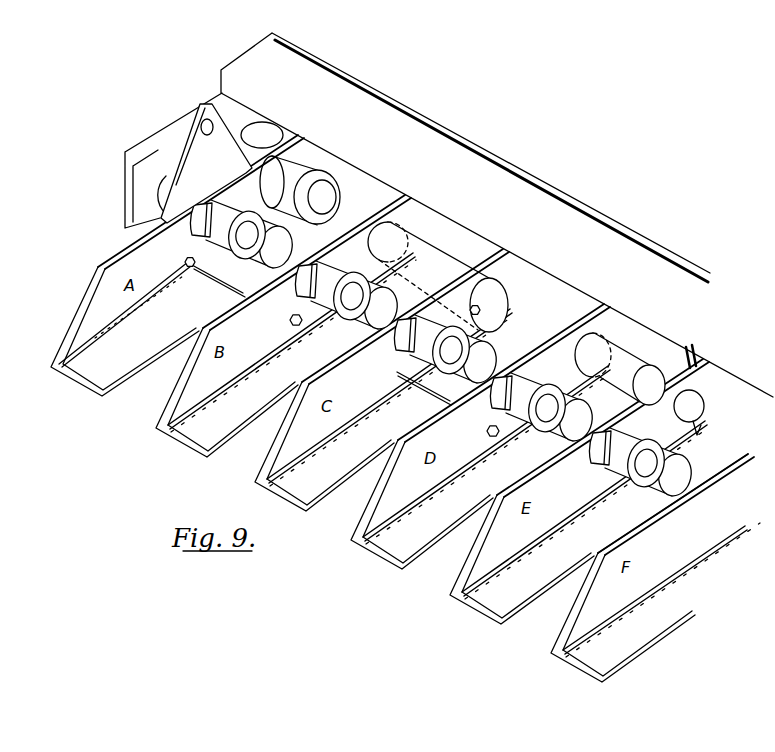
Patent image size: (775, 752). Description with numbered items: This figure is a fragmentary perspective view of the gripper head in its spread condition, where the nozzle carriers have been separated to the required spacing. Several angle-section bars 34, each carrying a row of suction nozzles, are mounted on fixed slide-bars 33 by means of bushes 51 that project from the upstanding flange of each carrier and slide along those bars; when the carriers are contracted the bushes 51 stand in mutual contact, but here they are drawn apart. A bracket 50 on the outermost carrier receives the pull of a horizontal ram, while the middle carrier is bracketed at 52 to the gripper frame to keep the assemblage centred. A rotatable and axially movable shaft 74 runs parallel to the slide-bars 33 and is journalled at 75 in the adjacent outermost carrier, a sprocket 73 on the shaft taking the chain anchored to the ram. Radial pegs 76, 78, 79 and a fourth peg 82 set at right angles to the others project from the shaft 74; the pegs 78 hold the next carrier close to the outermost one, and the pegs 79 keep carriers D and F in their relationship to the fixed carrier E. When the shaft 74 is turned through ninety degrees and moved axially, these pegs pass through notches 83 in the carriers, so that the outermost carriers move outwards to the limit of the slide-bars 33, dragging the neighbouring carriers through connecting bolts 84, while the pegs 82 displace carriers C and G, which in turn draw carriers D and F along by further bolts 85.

The slide-bar 33 is at (660, 482).
The angle-section bar 34 is at (178, 404).
The bracket 50 is at (195, 137).
The bush 51 is at (270, 266).
The bracket 52 is at (701, 354).
The sprocket 73 is at (264, 142).
The shaft 74 is at (450, 258).
The journal 75 is at (313, 168).
The peg 76 is at (576, 420).
The radial peg 78 is at (397, 229).
The peg 79 is at (620, 369).
The fourth peg 82 is at (400, 334).
The notch 83 is at (706, 439).
The connecting bolt 84 is at (224, 291).
The bolt 85 is at (424, 396).